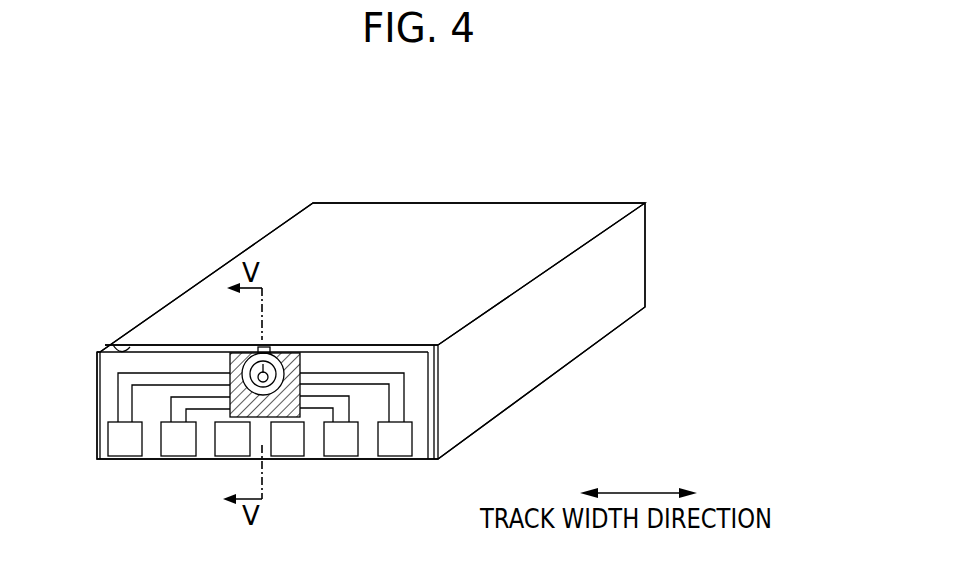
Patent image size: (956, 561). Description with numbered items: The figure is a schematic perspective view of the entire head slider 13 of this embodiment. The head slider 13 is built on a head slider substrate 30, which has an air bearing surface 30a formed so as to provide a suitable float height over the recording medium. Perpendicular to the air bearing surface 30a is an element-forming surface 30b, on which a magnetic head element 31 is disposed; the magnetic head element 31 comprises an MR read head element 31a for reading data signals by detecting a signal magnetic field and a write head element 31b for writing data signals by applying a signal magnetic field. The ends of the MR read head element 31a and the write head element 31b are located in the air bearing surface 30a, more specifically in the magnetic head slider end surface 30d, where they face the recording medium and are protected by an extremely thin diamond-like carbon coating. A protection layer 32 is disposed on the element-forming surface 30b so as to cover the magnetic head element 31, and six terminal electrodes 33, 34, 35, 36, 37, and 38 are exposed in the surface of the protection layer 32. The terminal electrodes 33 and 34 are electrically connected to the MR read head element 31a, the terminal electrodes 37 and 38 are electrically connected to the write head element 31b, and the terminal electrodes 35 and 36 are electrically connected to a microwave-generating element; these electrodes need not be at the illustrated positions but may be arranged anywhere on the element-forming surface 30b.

The head slider 13 is at (446, 171).
The head slider substrate 30 is at (632, 258).
The air bearing surface 30a is at (280, 243).
The element-forming surface 30b is at (113, 345).
The magnetic head slider end surface 30d is at (197, 350).
The magnetic head element 31 is at (404, 260).
The MR read head element 31a is at (270, 347).
The write head element 31b is at (288, 347).
The protection layer 32 is at (433, 410).
The terminal electrode 33 is at (172, 458).
The terminal electrode 34 is at (340, 457).
The terminal electrode 35 is at (227, 458).
The terminal electrode 36 is at (297, 457).
The terminal electrode 37 is at (120, 458).
The terminal electrode 38 is at (397, 457).